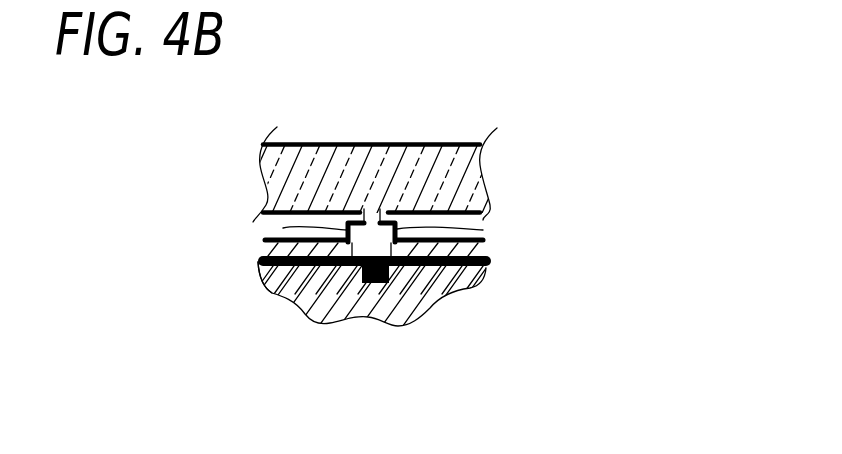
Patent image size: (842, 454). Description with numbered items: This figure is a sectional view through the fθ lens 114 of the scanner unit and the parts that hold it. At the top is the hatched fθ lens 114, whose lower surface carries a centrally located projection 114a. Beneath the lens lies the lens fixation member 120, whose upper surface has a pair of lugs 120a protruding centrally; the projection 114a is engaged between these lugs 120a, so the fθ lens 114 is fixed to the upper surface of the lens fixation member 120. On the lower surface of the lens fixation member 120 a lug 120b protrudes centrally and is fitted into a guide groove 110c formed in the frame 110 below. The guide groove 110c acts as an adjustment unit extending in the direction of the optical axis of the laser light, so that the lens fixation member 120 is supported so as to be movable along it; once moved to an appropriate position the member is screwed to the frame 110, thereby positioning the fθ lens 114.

The fθ lens 114 is at (358, 143).
The projection 114a is at (272, 293).
The lugs 120a is at (283, 228).
The lens fixation member 120 is at (483, 245).
The lug 120b is at (428, 266).
The frame 110 is at (485, 274).
The guide groove 110c is at (385, 284).